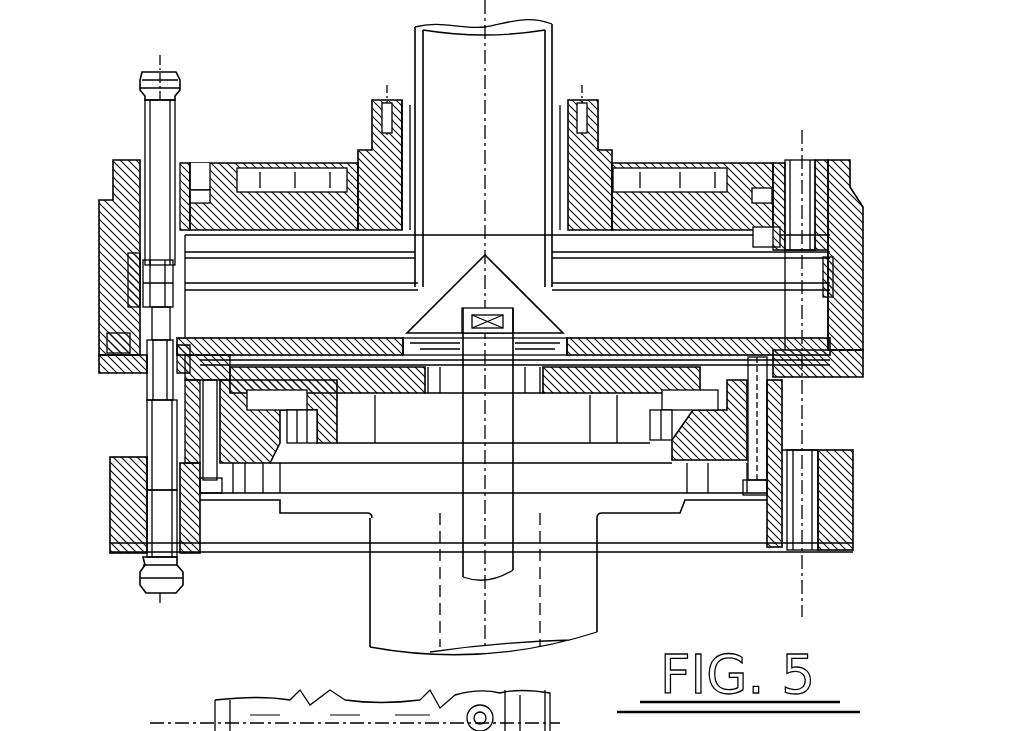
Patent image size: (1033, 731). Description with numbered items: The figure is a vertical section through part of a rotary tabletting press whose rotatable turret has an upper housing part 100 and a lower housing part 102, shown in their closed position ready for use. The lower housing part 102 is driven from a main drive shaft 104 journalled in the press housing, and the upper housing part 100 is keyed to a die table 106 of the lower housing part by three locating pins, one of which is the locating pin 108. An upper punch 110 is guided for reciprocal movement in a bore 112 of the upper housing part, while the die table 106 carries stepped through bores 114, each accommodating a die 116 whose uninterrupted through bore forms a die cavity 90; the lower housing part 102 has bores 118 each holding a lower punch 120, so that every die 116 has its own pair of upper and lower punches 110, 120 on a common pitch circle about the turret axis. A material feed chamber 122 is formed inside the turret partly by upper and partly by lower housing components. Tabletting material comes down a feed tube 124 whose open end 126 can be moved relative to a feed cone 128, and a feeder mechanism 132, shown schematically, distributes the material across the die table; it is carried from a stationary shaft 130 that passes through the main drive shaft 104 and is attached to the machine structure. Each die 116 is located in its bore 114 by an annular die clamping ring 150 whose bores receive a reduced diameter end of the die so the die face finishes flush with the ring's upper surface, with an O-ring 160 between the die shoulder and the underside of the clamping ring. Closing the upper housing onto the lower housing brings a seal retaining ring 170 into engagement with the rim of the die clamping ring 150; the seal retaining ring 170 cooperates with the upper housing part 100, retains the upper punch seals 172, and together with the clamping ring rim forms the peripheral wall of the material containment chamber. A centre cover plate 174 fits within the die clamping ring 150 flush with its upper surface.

The die cavity 90 is at (143, 347).
The upper turret housing part 100 is at (863, 250).
The lower turret housing part 102 is at (847, 552).
The main drive shaft 104 is at (568, 593).
The die table 106 is at (863, 373).
The locating pin 108 is at (122, 350).
The upper punch 110 is at (153, 105).
The bore 112 is at (153, 173).
The stepped through bore 114 is at (782, 372).
The die 116 is at (150, 350).
The bore 118 is at (793, 555).
The lower punch 120 is at (172, 540).
The material feed chamber 122 is at (697, 192).
The feed tube 124 is at (510, 73).
The open end 126 is at (548, 297).
The feed cone 128 is at (468, 290).
The stationary shaft 130 is at (473, 562).
The feeder mechanism 132 is at (363, 303).
The die clamping ring 150 is at (130, 305).
The O-ring 160 is at (197, 337).
The seal retaining ring 170 is at (823, 255).
The upper punch seal 172 is at (187, 255).
The centre cover plate 174 is at (620, 342).